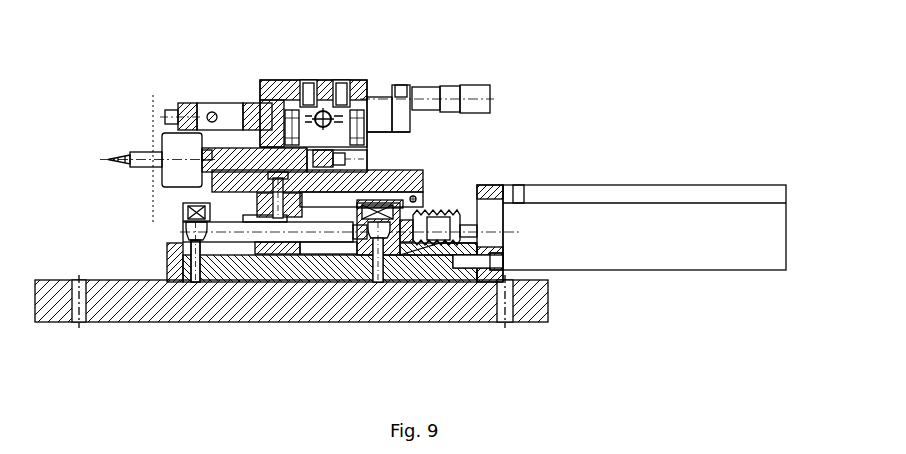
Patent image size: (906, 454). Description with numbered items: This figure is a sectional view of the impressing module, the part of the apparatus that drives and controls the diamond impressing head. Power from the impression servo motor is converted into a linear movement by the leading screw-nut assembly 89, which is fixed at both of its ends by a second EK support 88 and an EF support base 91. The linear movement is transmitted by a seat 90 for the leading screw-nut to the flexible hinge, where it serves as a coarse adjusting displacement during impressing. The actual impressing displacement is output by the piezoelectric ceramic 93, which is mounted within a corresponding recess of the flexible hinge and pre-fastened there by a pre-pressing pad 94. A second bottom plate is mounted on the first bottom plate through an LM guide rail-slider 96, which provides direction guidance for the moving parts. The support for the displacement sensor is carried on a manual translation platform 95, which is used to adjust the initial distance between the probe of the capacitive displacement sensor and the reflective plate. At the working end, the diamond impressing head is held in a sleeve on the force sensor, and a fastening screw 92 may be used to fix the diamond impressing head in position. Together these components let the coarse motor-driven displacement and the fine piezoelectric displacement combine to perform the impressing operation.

The second EK support 88 is at (397, 245).
The leading screw-nut assembly 89 is at (307, 230).
The seat for the leading screw-nut 90 is at (267, 250).
The EF support base 91 is at (205, 235).
The fastening screw 92 is at (138, 155).
The piezoelectric ceramic 93 is at (242, 150).
The pre-pressing pad 94 is at (308, 150).
The manual translation platform 95 is at (358, 103).
The LM guide rail-slider 96 is at (378, 197).